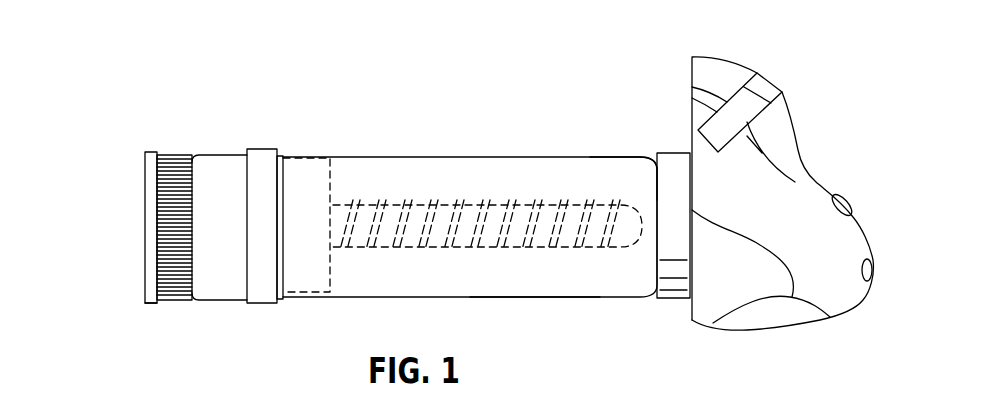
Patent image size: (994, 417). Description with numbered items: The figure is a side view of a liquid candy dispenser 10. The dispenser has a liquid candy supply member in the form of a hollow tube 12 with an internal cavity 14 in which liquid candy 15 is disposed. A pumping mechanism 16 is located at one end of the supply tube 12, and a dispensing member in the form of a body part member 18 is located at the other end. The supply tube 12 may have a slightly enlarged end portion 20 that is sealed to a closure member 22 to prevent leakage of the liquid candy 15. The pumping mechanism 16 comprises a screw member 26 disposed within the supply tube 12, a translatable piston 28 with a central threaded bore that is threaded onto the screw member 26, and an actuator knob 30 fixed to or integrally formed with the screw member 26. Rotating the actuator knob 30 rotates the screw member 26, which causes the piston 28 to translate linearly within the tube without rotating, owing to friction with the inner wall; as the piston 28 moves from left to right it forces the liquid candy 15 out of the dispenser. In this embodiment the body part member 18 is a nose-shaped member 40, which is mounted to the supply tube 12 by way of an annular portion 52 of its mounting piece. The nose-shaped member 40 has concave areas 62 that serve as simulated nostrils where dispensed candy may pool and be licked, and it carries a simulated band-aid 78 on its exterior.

The liquid candy dispenser 10 is at (186, 134).
The hollow tube 12 is at (505, 153).
The internal cavity 14 is at (613, 168).
The liquid candy 15 is at (525, 287).
The pumping mechanism 16 is at (119, 229).
The body part member 18 is at (741, 56).
The enlarged end portion 20 is at (265, 156).
The closure member 22 is at (226, 157).
The screw member 26 is at (437, 200).
The translatable piston 28 is at (332, 189).
The actuator knob 30 is at (152, 306).
The nose-shaped member 40 is at (817, 165).
The annular portion 52 is at (672, 160).
The concave areas 62 is at (775, 318).
The simulated band-aid 78 is at (781, 91).